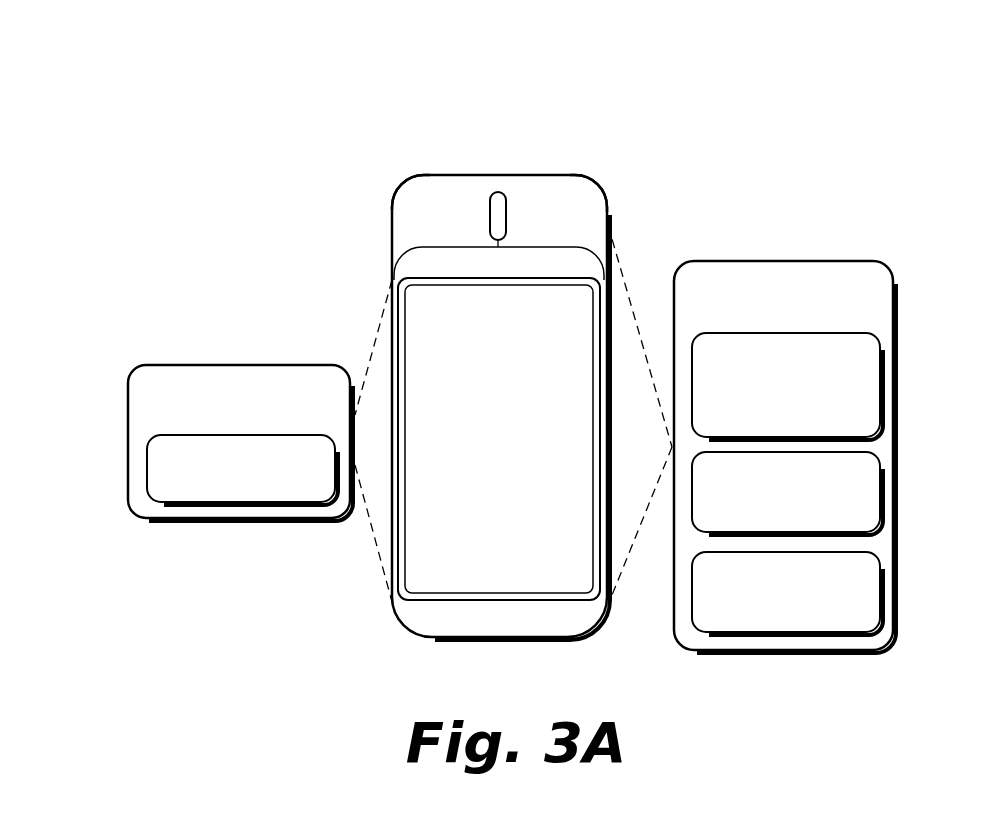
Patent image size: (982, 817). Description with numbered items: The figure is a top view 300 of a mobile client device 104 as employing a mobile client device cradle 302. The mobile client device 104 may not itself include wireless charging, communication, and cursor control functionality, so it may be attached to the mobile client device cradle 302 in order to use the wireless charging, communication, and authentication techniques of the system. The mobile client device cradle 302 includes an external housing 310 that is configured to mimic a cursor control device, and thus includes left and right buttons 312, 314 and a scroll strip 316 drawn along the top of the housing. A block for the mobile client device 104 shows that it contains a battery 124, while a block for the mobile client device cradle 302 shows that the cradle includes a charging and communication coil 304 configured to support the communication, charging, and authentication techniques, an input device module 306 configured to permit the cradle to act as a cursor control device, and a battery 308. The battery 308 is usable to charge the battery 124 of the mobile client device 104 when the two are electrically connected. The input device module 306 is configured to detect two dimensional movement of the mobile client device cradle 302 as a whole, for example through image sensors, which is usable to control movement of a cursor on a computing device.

The top view 300 is at (197, 82).
The external housing 310 is at (609, 214).
The left button 312 is at (402, 190).
The right button 314 is at (597, 182).
The scroll strip 316 is at (499, 190).
The mobile client device 104 is at (298, 427).
The battery 124 is at (300, 479).
The mobile client device cradle 302 is at (881, 322).
The charging and communication coil 304 is at (828, 424).
The input device module 306 is at (845, 516).
The battery 308 is at (845, 601).